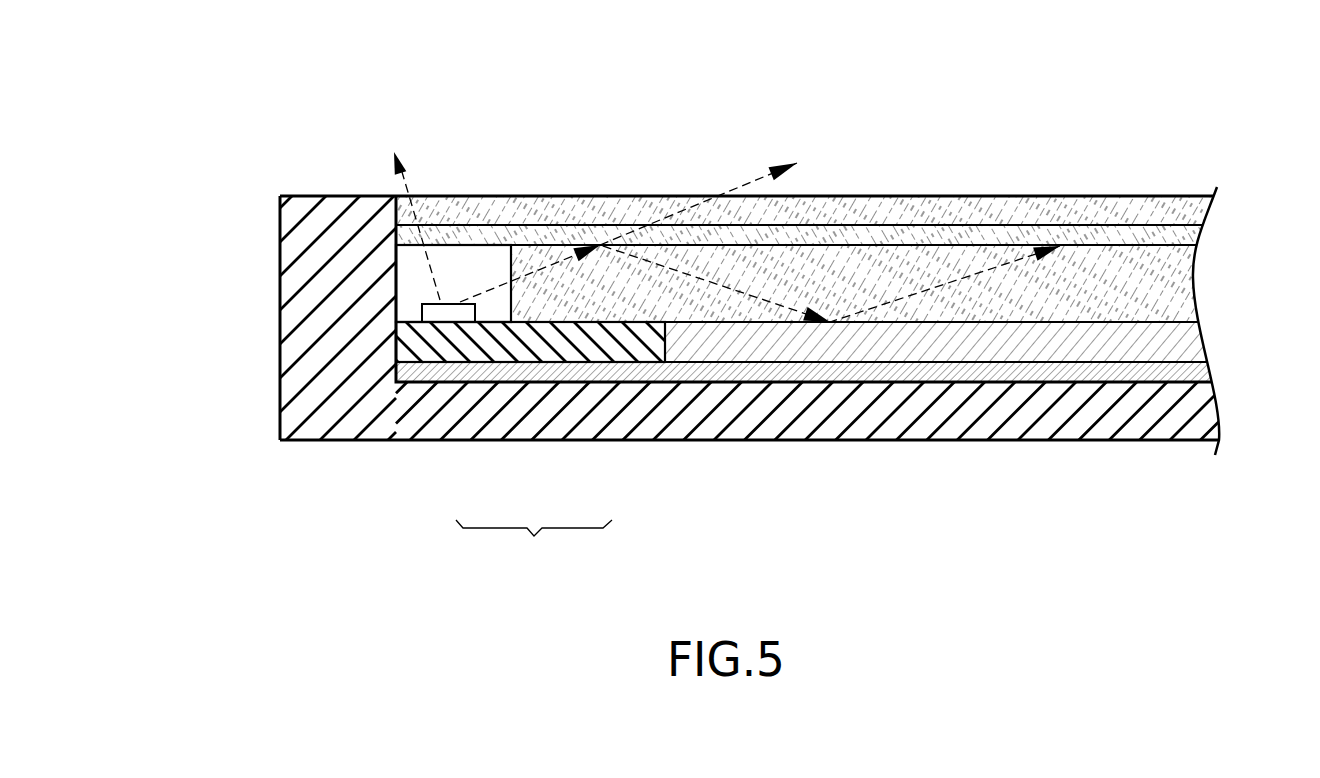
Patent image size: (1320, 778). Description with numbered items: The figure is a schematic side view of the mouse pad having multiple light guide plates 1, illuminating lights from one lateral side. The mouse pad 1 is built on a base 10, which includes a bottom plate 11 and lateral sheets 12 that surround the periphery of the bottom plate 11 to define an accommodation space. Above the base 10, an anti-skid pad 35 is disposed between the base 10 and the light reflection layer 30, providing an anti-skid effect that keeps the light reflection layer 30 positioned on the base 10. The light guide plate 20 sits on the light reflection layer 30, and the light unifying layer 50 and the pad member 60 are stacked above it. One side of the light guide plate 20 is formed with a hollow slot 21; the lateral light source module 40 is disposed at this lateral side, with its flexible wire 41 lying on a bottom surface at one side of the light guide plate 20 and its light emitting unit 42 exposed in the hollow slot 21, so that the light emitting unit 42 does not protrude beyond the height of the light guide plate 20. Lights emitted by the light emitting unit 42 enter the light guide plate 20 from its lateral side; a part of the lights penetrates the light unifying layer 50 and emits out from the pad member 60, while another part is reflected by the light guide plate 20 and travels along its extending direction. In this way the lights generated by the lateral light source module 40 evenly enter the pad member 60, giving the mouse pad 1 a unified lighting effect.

The mouse pad having multiple light guide plates 1 is at (775, 59).
The base 10 is at (953, 455).
The bottom plate 11 is at (833, 415).
The lateral sheets 12 is at (313, 288).
The light guide plates 20 is at (1152, 280).
The hollow slot 21 is at (465, 267).
The light reflection layer 30 is at (1192, 345).
The anti-skid pad 35 is at (1202, 371).
The lateral light source module 40 is at (534, 547).
The flexible wire 41 is at (600, 345).
The light emitting unit 42 is at (456, 314).
The light unifying layer 50 is at (1125, 245).
The pad member 60 is at (981, 176).